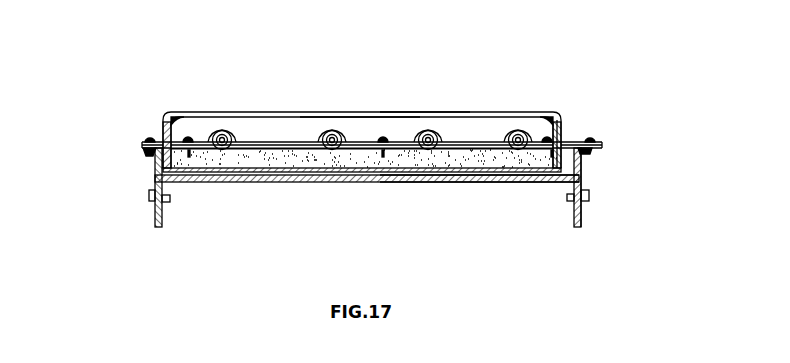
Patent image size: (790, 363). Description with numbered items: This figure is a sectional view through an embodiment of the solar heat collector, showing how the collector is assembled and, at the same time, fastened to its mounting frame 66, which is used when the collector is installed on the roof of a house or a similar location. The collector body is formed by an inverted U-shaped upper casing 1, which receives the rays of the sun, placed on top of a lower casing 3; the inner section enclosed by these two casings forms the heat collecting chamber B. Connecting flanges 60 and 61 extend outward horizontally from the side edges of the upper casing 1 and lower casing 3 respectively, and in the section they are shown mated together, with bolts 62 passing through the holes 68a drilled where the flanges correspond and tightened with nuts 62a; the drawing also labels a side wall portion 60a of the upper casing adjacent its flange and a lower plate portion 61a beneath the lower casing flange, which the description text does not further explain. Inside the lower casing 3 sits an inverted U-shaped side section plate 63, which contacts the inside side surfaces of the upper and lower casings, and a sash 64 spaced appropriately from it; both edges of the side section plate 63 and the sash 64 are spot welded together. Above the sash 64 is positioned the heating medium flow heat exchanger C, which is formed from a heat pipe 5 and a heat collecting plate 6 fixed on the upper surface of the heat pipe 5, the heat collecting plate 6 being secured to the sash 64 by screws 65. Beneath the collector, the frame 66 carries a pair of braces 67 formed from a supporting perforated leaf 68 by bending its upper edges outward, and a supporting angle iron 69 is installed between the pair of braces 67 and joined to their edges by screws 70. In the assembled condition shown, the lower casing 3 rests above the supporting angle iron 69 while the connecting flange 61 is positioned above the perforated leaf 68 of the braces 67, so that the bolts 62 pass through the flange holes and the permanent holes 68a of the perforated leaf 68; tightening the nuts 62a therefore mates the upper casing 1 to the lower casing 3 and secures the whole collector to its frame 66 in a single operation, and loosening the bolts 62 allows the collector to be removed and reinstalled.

The upper casing 1 is at (389, 113).
The lower casing 3 is at (224, 175).
The heat pipe 5 is at (221, 131).
The heat collecting plate 6 is at (298, 143).
The heat collecting chamber B is at (360, 124).
The heating medium flow heat exchanger C is at (250, 142).
The connecting flange 60 is at (145, 140).
The side wall 60a is at (569, 139).
The connecting flange 61 is at (142, 145).
The lower plate 61a is at (594, 152).
The bolt 62 is at (150, 139).
The nut 62a is at (147, 152).
The side section plate 63 is at (164, 115).
The sash 64 is at (267, 150).
The screw 65 is at (362, 146).
The frame 66 is at (583, 220).
The brace 67 is at (155, 176).
The supporting perforated leaf 68 is at (151, 185).
The hole 68a is at (590, 160).
The supporting angle iron 69 is at (492, 180).
The screw 70 is at (149, 202).